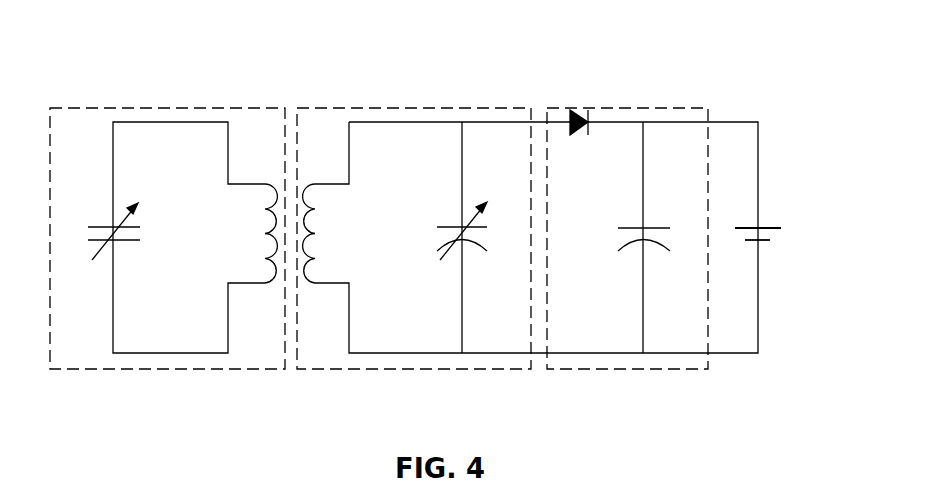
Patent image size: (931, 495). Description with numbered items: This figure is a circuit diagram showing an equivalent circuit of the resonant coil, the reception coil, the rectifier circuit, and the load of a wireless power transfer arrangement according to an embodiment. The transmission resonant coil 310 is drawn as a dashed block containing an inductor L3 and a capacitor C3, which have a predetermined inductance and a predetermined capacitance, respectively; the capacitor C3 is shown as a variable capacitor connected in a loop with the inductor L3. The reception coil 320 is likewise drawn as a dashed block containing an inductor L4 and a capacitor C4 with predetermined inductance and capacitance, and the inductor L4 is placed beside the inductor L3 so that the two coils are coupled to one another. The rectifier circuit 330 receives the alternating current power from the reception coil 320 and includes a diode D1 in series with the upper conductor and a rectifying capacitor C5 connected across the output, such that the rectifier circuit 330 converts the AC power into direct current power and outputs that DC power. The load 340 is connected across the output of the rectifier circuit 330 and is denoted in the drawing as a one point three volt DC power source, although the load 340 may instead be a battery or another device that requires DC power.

The transmission resonant coil 310 is at (167, 209).
The reception coil 320 is at (527, 209).
The rectifier circuit 330 is at (627, 209).
The load 340 is at (770, 222).
The capacitor C3 is at (100, 231).
The inductor L3 is at (238, 233).
The inductor L4 is at (345, 233).
The capacitor C4 is at (478, 237).
The rectifying capacitor C5 is at (659, 237).
The diode D1 is at (578, 104).